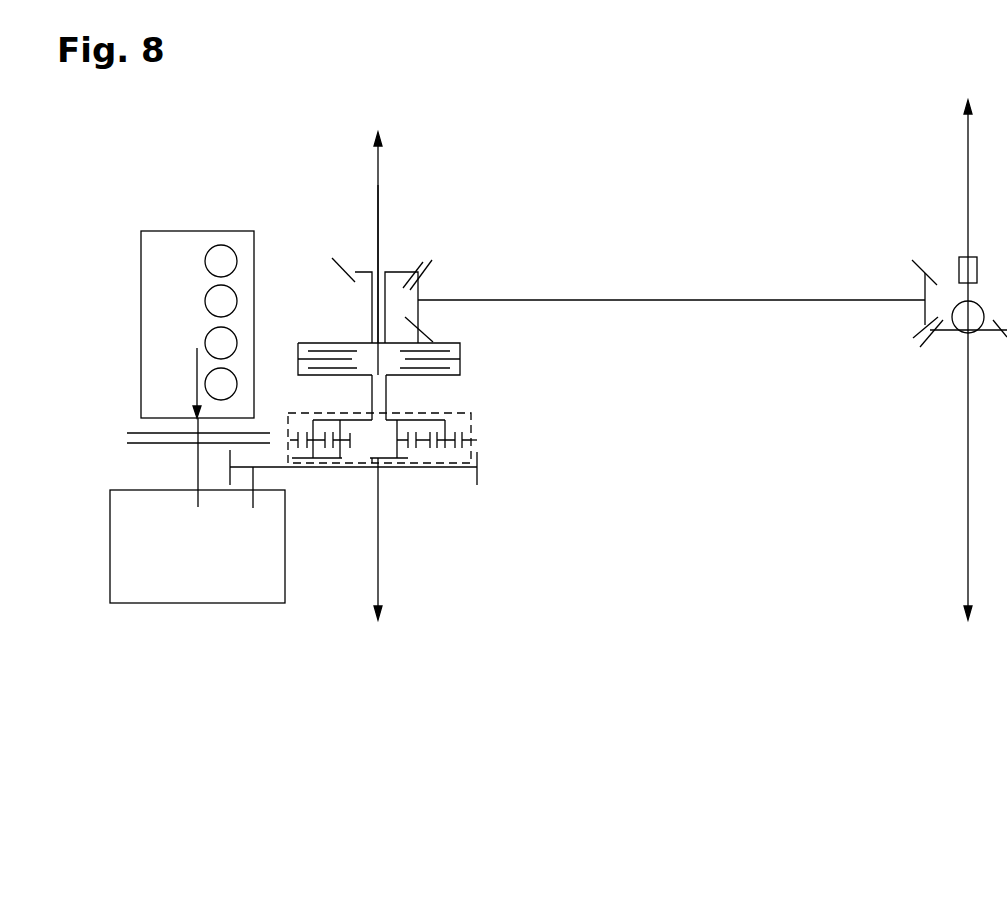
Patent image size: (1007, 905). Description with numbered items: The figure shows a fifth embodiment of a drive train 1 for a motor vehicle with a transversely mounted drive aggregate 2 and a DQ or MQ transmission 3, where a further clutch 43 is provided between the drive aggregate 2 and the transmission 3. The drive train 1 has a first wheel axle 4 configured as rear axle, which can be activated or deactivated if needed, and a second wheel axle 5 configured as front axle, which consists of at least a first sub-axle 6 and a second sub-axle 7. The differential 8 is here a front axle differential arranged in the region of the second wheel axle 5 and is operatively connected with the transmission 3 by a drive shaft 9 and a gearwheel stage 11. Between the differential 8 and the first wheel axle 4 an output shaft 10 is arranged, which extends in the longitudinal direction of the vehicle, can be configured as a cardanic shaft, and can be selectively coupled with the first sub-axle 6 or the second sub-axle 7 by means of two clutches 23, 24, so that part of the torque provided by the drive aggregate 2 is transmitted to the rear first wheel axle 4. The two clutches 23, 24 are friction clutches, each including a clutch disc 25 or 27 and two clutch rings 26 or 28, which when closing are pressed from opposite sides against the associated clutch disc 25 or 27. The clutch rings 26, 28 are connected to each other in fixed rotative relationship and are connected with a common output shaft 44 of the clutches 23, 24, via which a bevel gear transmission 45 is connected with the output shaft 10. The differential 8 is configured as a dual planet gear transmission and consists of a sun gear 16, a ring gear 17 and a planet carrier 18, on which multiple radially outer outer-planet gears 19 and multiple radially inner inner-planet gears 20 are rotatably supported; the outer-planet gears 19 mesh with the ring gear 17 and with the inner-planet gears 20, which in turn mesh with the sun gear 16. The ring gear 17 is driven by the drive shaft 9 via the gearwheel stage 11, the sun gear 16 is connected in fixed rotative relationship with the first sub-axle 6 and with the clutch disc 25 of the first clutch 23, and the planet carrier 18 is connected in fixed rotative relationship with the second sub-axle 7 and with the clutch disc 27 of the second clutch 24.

The drive train 1 is at (607, 160).
The drive aggregate 2 is at (162, 242).
The transmission 3 is at (175, 590).
The first wheel axle 4 is at (952, 488).
The second wheel axle 5 is at (392, 162).
The first sub-axle 6 is at (378, 185).
The second sub-axle 7 is at (378, 565).
The differential 8 is at (482, 428).
The drive shaft 9 is at (290, 486).
The output shaft 10 is at (742, 302).
The gearwheel stage 11 is at (283, 432).
The sun gear 16 is at (413, 464).
The ring gear 17 is at (478, 456).
The planet carrier 18 is at (393, 472).
The outer-planet gears 19 is at (320, 468).
The inner-planet gears 20 is at (348, 468).
The first clutch 23 is at (482, 347).
The second clutch 24 is at (482, 366).
The clutch disc 25 is at (322, 350).
The clutch rings 26 is at (447, 342).
The clutch disc 27 is at (342, 373).
The clutch rings 28 is at (417, 375).
The further clutch 43 is at (183, 453).
The common output shaft 44 is at (362, 292).
The bevel gear transmission 45 is at (435, 255).